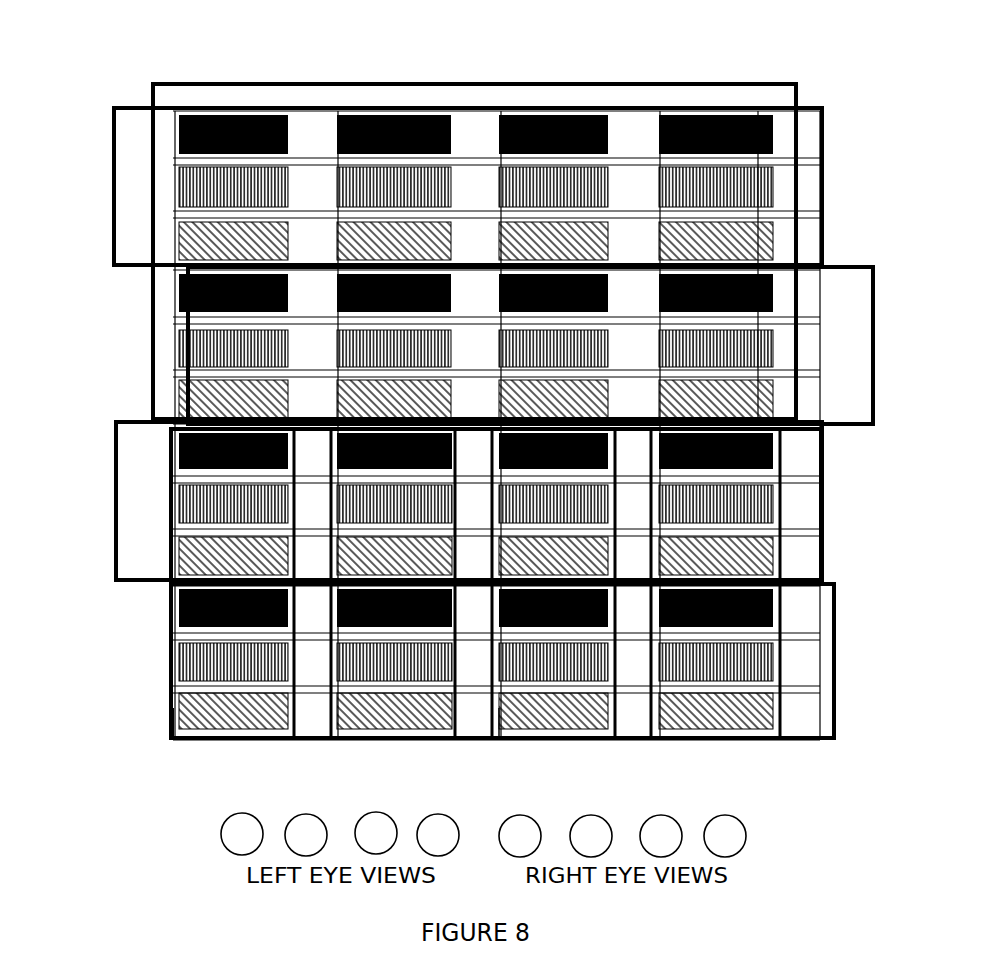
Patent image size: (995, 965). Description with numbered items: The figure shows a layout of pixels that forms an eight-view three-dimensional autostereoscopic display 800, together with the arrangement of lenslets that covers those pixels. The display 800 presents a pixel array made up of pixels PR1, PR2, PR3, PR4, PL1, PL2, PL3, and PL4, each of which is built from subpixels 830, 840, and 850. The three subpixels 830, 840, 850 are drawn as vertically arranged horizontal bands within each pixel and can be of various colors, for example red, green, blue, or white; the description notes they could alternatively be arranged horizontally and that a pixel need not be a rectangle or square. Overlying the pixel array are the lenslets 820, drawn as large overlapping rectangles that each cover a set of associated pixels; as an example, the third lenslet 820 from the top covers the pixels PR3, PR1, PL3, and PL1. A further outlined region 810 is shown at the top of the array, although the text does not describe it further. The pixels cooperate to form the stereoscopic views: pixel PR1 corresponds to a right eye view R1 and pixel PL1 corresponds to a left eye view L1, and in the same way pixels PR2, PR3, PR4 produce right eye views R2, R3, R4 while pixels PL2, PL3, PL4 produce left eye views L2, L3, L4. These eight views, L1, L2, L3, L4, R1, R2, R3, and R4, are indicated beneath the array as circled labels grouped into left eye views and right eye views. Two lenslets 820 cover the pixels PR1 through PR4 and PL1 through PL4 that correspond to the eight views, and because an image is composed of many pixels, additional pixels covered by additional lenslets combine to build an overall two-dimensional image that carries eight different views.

The display 800 is at (733, 790).
The first viewing zone region 810 is at (275, 72).
The lenslets 820 is at (178, 320).
The subpixel 830 is at (171, 609).
The subpixel 840 is at (171, 660).
The subpixel 850 is at (171, 713).
The pixel PR1 is at (322, 461).
The pixel PR2 is at (373, 732).
The pixel PR3 is at (162, 531).
The pixel PR4 is at (163, 730).
The pixel PL1 is at (817, 518).
The pixel PL2 is at (773, 675).
The pixel PL3 is at (610, 487).
The pixel PL4 is at (530, 735).
The left eye view L1 is at (242, 834).
The left eye view L2 is at (306, 835).
The left eye view L3 is at (376, 833).
The left eye view L4 is at (438, 835).
The right eye view R1 is at (520, 836).
The right eye view R2 is at (591, 836).
The right eye view R3 is at (661, 836).
The right eye view R4 is at (725, 836).